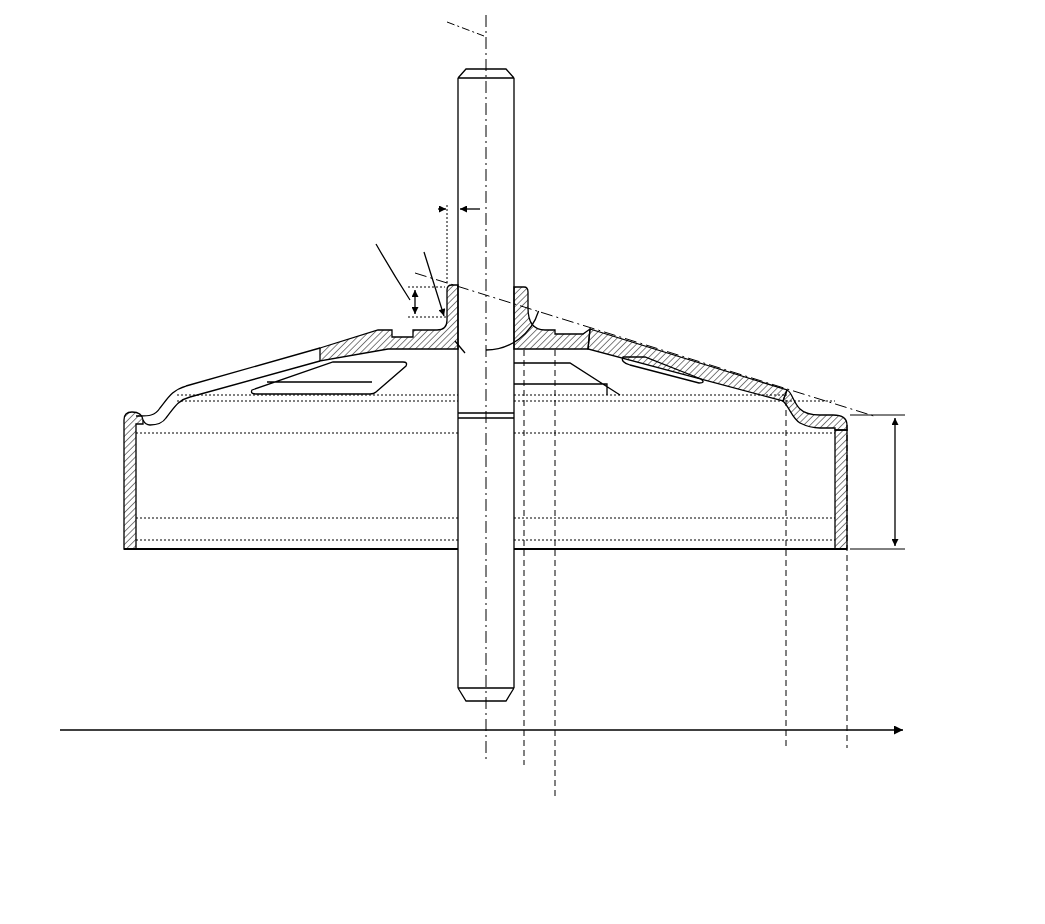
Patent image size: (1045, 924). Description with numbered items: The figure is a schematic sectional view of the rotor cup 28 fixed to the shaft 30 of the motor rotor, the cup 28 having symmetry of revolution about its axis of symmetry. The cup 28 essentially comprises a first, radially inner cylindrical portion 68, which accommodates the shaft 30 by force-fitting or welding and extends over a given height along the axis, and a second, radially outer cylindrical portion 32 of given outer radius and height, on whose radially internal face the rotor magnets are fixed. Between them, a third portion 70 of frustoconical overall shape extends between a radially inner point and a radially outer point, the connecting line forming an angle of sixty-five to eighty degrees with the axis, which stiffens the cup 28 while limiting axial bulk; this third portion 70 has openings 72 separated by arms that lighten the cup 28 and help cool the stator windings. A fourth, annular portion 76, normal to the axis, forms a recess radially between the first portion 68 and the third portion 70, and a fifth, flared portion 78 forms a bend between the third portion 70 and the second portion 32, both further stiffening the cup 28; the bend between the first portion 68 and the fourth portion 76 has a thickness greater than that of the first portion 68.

The rotor cup 28 is at (302, 117).
The shaft 30 is at (472, 143).
The second, radially outer cylindrical portion 32 is at (120, 464).
The first, radially inner cylindrical portion 68 is at (522, 289).
The third portion 70 is at (248, 363).
The openings 72 is at (324, 369).
The fourth, annular portion 76 is at (390, 326).
The fifth, flared portion 78 is at (155, 389).